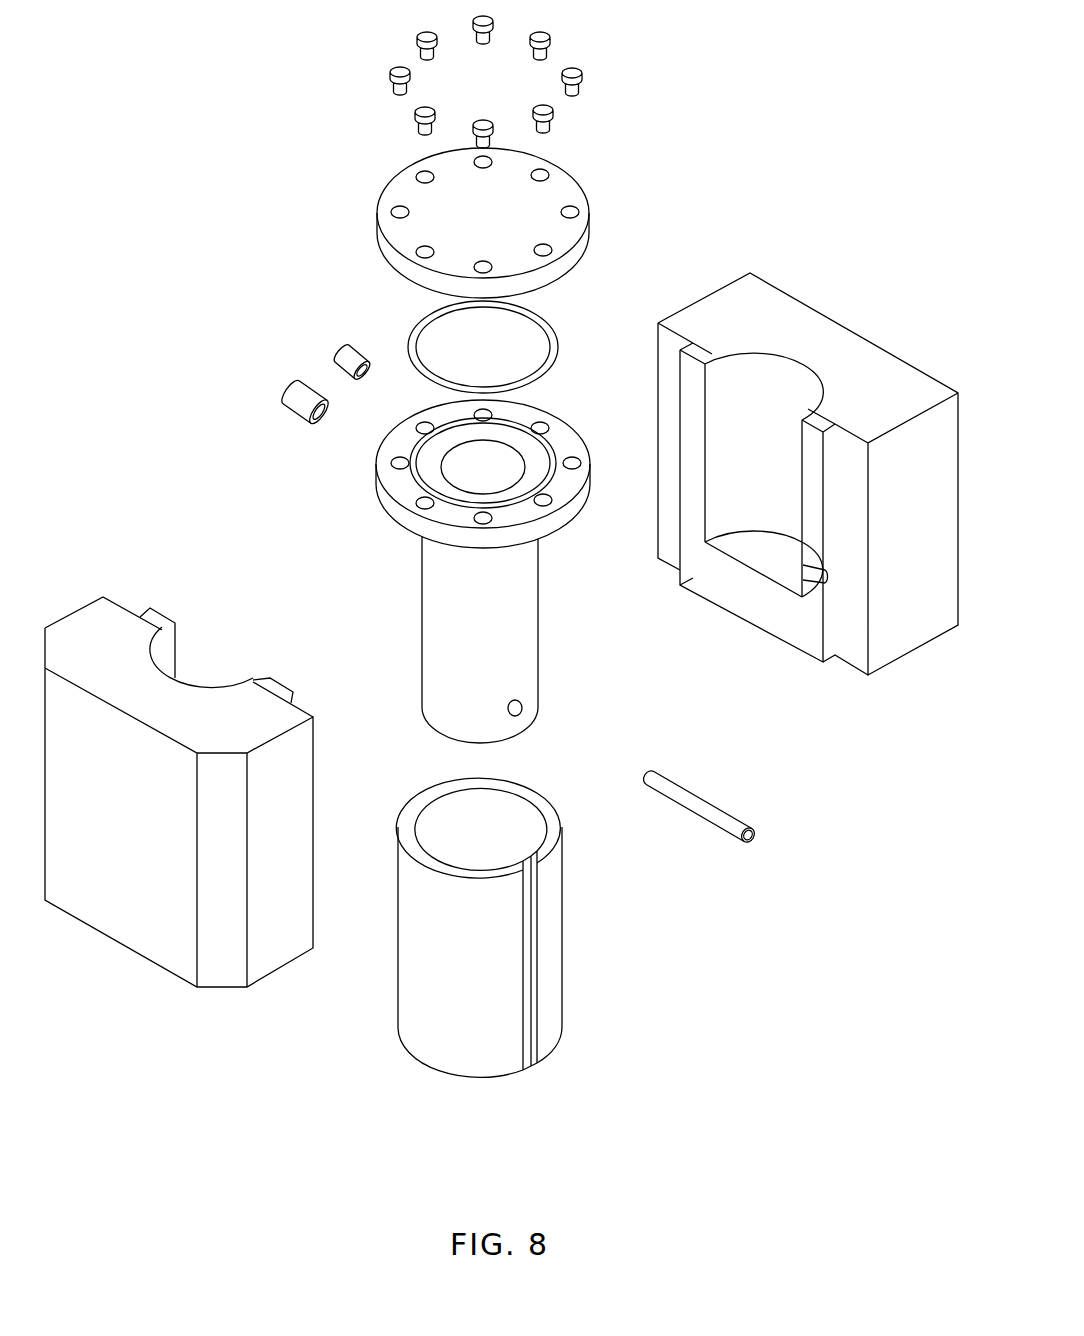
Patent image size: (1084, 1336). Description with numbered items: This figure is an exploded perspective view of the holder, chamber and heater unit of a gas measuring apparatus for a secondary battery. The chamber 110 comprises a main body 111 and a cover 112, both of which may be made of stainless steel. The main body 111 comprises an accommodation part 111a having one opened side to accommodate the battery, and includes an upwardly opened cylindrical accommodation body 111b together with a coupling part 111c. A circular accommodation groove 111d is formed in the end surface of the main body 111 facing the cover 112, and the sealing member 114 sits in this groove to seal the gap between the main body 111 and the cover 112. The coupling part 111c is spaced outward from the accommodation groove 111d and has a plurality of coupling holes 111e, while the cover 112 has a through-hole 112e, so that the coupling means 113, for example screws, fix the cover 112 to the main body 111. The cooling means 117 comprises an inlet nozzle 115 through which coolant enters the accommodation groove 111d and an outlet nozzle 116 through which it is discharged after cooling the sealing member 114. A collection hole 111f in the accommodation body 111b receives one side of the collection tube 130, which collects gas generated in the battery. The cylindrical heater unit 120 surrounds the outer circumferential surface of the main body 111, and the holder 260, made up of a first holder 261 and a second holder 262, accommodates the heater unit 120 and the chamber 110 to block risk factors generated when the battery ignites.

The chamber 110 is at (665, 208).
The main body 111 is at (570, 631).
The accommodation part 111a is at (516, 471).
The accommodation body 111b is at (422, 618).
The coupling part 111c is at (410, 519).
The accommodation groove 111d is at (553, 450).
The coupling holes 111e is at (548, 502).
The collection hole 111f is at (524, 708).
The cover 112 is at (568, 243).
The through-hole 112e is at (549, 175).
The coupling means 113 is at (582, 82).
The sealing member 114 is at (563, 349).
The inlet nozzle 115 is at (342, 355).
The outlet nozzle 116 is at (298, 392).
The cooling means 117 is at (313, 297).
The heater unit 120 is at (590, 937).
The collection tube 130 is at (712, 807).
The holder 260 is at (587, 1168).
The first holder 261 is at (908, 640).
The second holder 262 is at (278, 948).